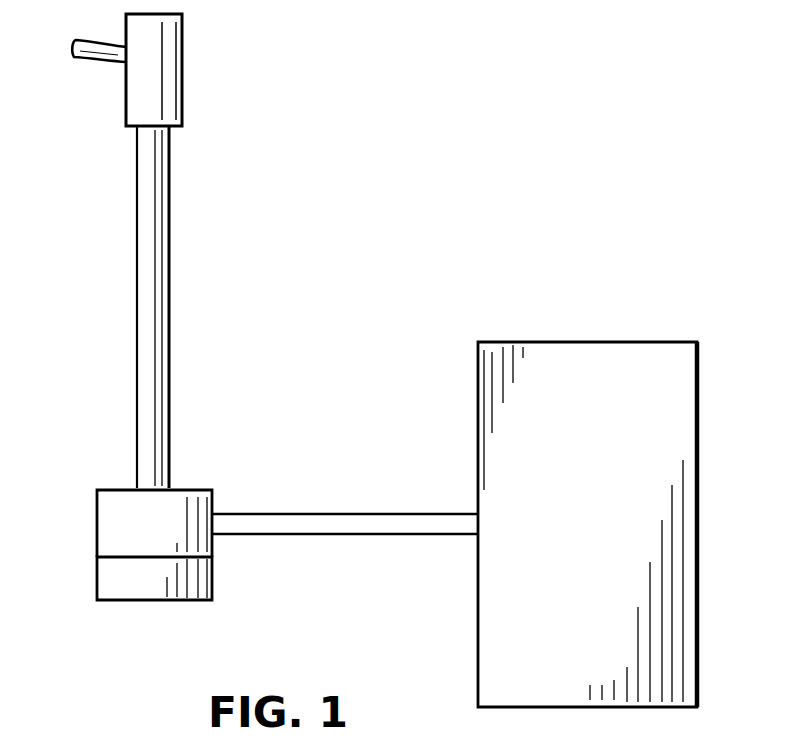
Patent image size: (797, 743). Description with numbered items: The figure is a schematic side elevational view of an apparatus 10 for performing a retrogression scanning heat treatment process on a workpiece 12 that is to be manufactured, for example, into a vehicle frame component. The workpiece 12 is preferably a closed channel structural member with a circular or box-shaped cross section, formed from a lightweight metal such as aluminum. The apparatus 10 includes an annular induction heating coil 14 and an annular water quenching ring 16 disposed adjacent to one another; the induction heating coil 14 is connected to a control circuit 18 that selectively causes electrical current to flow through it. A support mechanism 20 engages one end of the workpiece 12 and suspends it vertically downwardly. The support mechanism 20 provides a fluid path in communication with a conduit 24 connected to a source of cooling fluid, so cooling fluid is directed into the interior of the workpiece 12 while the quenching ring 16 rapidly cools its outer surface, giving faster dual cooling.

The apparatus 10 is at (521, 141).
The workpiece 12 is at (160, 274).
The induction heating coil 14 is at (110, 519).
The water quenching ring 16 is at (110, 575).
The control circuit 18 is at (682, 388).
The support mechanism 20 is at (160, 63).
The conduit 24 is at (104, 61).